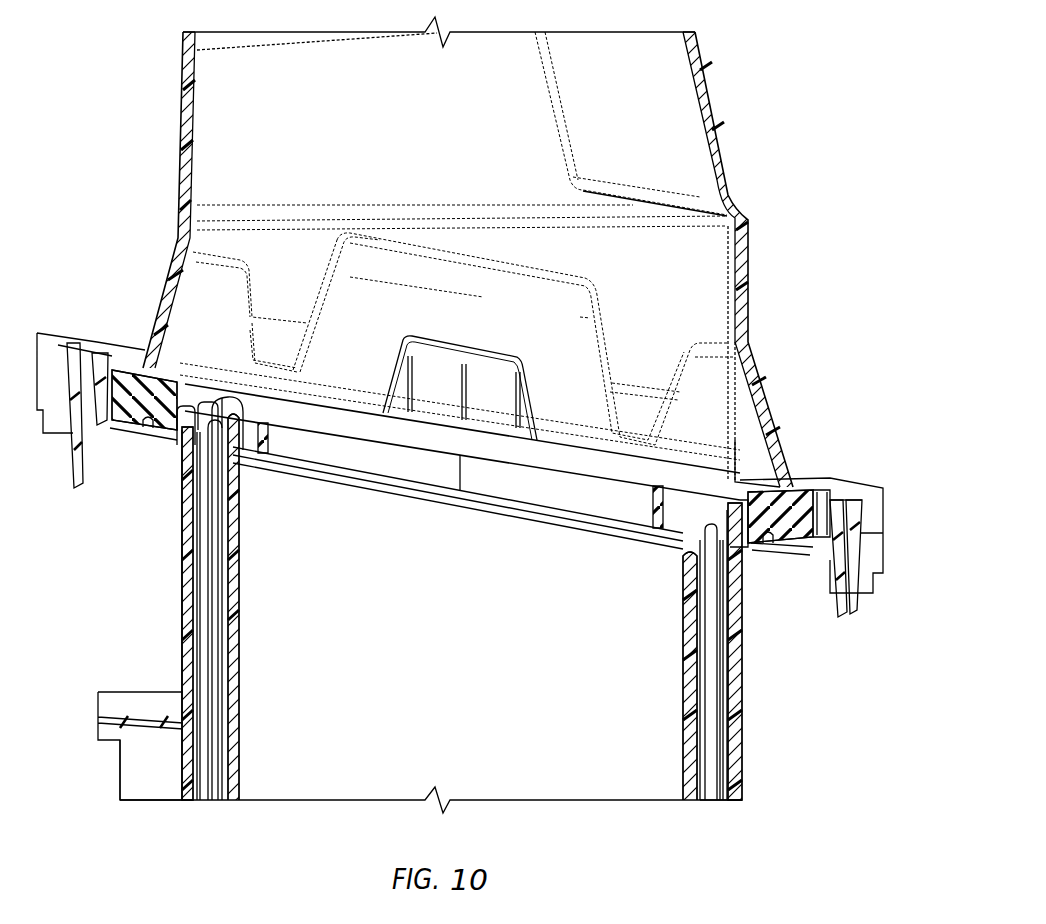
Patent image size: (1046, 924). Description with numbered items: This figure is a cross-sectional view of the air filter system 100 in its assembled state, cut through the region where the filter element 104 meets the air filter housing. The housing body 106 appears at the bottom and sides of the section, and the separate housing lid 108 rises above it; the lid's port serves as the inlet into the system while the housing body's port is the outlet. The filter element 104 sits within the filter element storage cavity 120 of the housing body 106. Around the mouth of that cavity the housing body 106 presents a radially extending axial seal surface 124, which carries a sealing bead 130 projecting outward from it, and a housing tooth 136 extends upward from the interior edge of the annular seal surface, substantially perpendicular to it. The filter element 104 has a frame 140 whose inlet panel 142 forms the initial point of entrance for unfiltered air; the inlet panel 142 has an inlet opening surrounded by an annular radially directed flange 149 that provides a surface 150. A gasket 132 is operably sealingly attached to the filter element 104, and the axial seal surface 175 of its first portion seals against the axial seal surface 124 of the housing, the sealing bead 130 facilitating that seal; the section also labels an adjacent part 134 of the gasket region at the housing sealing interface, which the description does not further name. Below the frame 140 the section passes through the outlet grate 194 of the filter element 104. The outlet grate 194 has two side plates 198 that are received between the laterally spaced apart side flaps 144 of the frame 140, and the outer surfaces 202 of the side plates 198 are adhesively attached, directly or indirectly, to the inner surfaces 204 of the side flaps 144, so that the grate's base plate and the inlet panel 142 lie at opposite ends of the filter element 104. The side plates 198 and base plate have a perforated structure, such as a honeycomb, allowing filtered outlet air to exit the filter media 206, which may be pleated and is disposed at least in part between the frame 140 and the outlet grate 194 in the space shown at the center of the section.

The air filter system 100 is at (72, 265).
The filter element 104 is at (188, 588).
The housing body 106 is at (740, 680).
The housing lid 108 is at (712, 125).
The filter element storage cavity 120 is at (188, 622).
The axial seal surface 124 is at (205, 400).
The sealing bead 130 is at (176, 440).
The gasket 132 is at (820, 500).
The clip leg 134 is at (830, 500).
The housing tooth 136 is at (450, 340).
The frame 140 is at (232, 405).
The inlet panel 142 is at (357, 450).
The side flaps 144 is at (222, 535).
The annular radially directed flange 149 is at (750, 460).
The surface 150 is at (140, 378).
The axial seal surface 175 is at (148, 432).
The outlet grate 194 is at (218, 742).
The side plates 198 is at (235, 545).
The outer surfaces 202 is at (232, 590).
The inner surfaces 204 is at (235, 625).
The filter media 206 is at (536, 737).